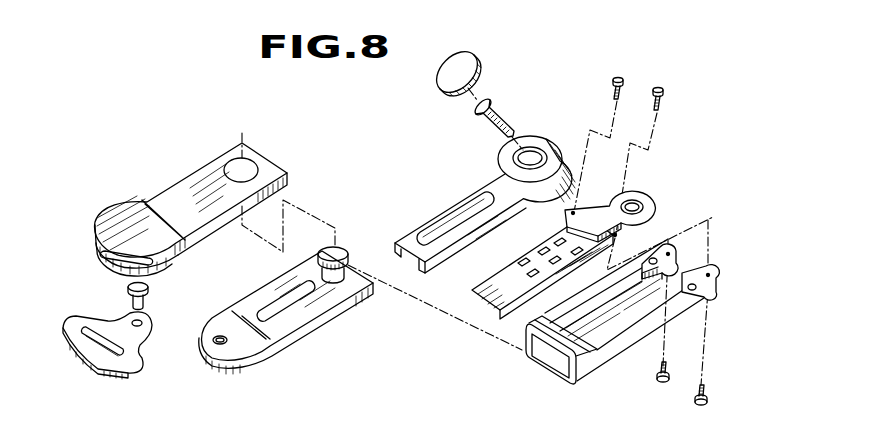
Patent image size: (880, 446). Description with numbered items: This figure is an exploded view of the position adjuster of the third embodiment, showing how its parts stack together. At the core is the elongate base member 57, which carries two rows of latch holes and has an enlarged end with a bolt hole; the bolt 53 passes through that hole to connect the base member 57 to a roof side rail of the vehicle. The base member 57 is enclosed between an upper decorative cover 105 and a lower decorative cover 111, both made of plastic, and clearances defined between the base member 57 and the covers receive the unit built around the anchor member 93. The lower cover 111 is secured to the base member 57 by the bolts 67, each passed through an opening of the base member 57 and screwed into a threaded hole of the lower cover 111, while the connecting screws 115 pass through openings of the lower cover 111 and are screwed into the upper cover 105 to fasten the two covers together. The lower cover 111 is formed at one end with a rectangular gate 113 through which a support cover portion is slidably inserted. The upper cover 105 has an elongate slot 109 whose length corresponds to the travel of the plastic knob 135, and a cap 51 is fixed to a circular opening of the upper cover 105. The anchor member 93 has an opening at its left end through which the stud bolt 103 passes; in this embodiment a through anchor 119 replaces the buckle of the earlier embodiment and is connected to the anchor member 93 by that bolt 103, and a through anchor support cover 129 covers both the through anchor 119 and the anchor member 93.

The cap 51 is at (483, 62).
The bolt 53 is at (497, 112).
The base member 57 is at (650, 196).
The bolts 67 is at (655, 88).
The anchor member 93 is at (327, 322).
The stud bolt 103 is at (151, 289).
The upper decorative cover 105 is at (547, 140).
The elongate slot 109 is at (457, 212).
The lower decorative cover 111 is at (630, 348).
The rectangular gate 113 is at (553, 358).
The connecting screws 115 is at (696, 400).
The through anchor 119 is at (140, 360).
The through anchor support cover 129 is at (175, 184).
The knob 135 is at (340, 251).